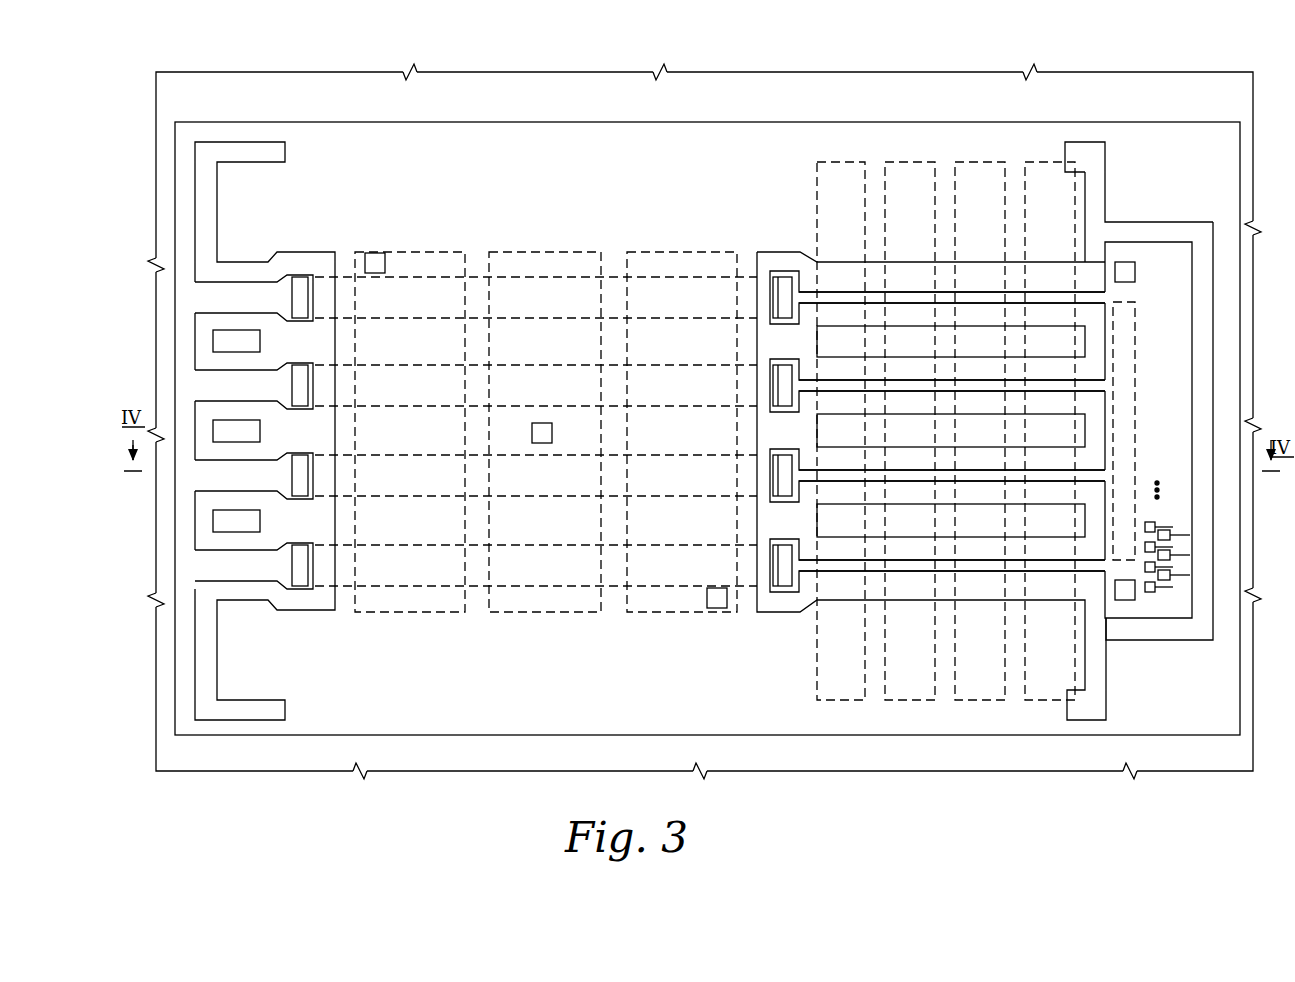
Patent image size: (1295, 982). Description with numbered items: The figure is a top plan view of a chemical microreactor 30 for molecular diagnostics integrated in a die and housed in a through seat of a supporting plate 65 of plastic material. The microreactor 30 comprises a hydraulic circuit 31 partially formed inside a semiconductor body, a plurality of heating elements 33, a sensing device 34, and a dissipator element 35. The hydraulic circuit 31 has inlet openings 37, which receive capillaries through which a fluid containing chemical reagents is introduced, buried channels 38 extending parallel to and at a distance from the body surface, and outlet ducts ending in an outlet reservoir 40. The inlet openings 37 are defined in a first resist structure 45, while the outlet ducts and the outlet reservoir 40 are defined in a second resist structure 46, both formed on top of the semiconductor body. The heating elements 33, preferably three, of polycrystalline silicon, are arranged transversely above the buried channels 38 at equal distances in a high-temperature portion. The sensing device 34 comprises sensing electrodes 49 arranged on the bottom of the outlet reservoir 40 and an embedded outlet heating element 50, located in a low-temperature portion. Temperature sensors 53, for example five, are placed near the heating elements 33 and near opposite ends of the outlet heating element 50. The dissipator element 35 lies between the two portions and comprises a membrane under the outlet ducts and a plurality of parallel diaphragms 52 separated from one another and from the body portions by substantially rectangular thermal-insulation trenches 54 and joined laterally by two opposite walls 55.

The chemical microreactor 30 is at (616, 64).
The hydraulic circuit 31 is at (792, 615).
The heating elements 33 is at (432, 262).
The sensing device 34 is at (1190, 506).
The dissipator element 35 is at (940, 702).
The inlet openings 37 is at (213, 387).
The buried channels 38 is at (445, 298).
The outlet reservoir 40 is at (1166, 254).
The first resist structure 45 is at (203, 245).
The second resist structure 46 is at (1112, 232).
The sensing electrodes 49 is at (1188, 552).
The outlet heating element 50 is at (1127, 410).
The diaphragms 52 is at (872, 650).
The temperature sensors 53 is at (370, 256).
The thermal-insulation trenches 54 is at (902, 176).
The walls 55 is at (928, 150).
The supporting plate 65 is at (331, 90).